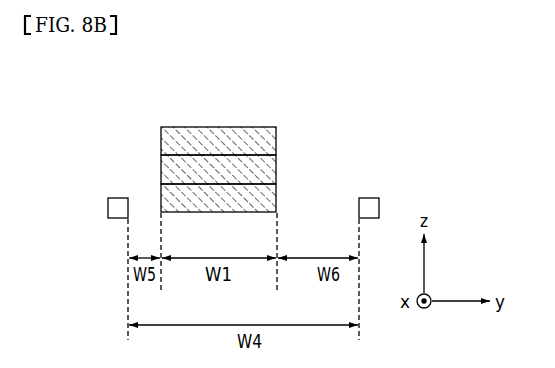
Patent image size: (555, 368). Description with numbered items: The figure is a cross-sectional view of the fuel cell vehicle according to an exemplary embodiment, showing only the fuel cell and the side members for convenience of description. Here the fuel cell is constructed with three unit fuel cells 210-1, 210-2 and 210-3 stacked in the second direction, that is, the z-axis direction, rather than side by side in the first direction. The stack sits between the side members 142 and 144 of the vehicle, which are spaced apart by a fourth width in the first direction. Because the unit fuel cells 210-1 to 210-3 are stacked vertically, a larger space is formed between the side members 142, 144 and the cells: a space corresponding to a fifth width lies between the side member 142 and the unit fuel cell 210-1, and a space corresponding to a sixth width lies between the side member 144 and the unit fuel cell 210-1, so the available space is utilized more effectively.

The side member 142 is at (113, 198).
The side member 144 is at (366, 198).
The unit fuel cell 210-1 is at (276, 198).
The unit fuel cell 210-2 is at (276, 169).
The unit fuel cell 210-3 is at (276, 142).